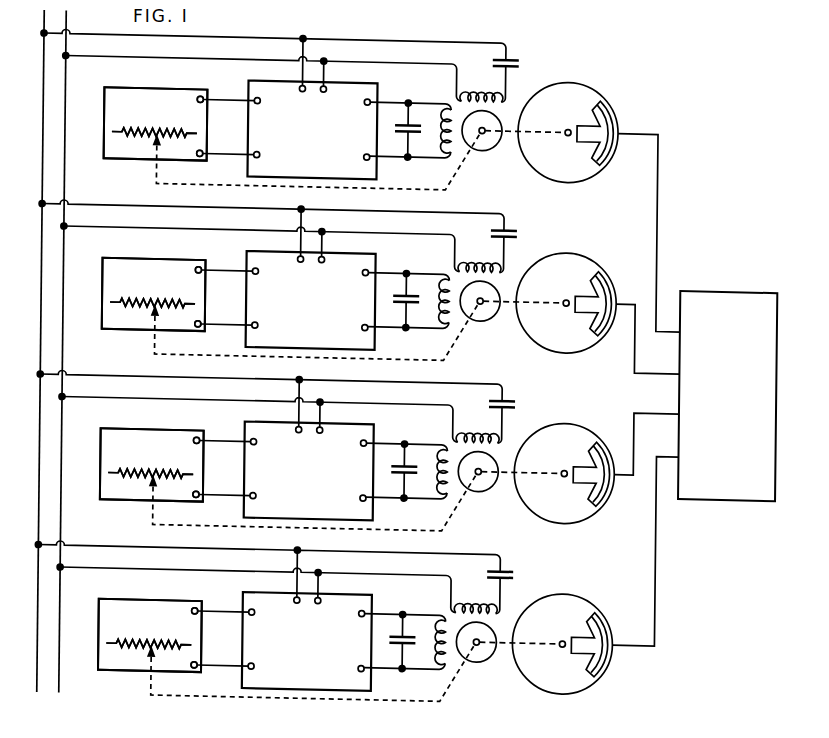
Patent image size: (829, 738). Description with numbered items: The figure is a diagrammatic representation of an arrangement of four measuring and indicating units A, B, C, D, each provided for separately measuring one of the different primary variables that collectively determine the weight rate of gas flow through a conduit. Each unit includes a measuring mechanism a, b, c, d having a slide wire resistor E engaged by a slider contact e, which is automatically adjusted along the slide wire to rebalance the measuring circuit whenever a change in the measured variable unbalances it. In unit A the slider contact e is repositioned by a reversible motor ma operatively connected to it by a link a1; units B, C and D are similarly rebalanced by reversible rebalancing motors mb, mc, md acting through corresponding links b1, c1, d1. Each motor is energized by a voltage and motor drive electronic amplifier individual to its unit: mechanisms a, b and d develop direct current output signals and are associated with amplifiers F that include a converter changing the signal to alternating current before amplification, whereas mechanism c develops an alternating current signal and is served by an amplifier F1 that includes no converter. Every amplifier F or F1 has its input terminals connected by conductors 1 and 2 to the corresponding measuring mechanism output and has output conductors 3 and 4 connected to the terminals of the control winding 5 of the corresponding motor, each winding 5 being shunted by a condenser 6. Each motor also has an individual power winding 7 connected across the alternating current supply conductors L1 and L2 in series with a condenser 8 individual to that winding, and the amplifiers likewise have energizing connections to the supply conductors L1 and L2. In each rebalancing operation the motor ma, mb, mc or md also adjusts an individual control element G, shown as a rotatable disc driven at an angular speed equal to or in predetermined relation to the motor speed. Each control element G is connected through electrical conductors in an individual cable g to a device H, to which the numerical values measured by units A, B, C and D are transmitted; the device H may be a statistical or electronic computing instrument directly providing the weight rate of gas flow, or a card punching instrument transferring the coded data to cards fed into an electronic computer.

The alternating current supply conductor L1 is at (43, 128).
The alternating current supply conductor L2 is at (67, 128).
The measuring and indicating unit A is at (272, 119).
The measuring and indicating unit B is at (270, 289).
The measuring and indicating unit C is at (268, 460).
The measuring and indicating unit D is at (267, 630).
The measuring mechanism a is at (143, 124).
The measuring mechanism b is at (141, 294).
The measuring mechanism c is at (139, 465).
The measuring mechanism d is at (137, 635).
The link a1 is at (318, 170).
The link b1 is at (316, 340).
The link c1 is at (314, 511).
The link d1 is at (312, 681).
The slide wire resistor E is at (152, 379).
The slider contact e is at (140, 400).
The voltage and motor drive electronic amplifier F is at (310, 386).
The voltage and motor drive electronic amplifier F1 is at (309, 471).
The conductor 1 is at (230, 94).
The conductor 2 is at (230, 152).
The output conductor 3 is at (432, 93).
The output conductor 4 is at (439, 150).
The control winding 5 is at (439, 127).
The condenser 6 is at (395, 122).
The power winding 7 is at (487, 81).
The condenser 8 is at (521, 53).
The reversible motor ma is at (513, 146).
The reversible rebalancing motor mb is at (512, 317).
The reversible rebalancing motor mc is at (510, 487).
The reversible rebalancing motor md is at (508, 658).
The control element G is at (565, 401).
The cable g is at (661, 196).
The device H is at (737, 388).